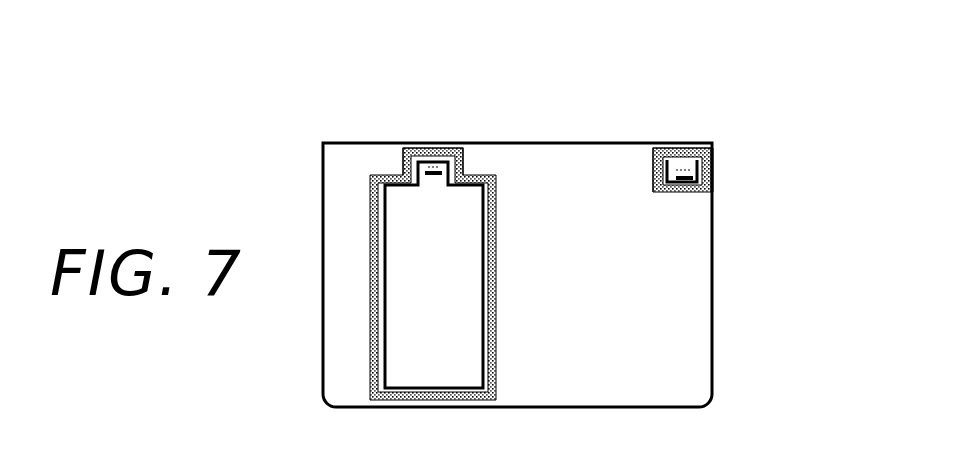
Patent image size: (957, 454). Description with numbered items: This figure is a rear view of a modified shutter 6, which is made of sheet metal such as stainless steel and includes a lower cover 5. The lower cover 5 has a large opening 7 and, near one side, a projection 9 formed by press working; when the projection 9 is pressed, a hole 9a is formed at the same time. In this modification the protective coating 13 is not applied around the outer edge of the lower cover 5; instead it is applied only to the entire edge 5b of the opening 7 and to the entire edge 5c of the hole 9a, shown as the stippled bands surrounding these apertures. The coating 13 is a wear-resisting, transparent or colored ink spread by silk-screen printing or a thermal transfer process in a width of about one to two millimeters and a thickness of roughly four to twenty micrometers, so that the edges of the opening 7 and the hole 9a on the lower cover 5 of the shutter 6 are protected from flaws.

The lower cover 5 is at (568, 162).
The edge of the opening 5b is at (496, 258).
The edge of the hole 5c is at (688, 194).
The shutter 6 is at (724, 111).
The opening 7 is at (485, 320).
The projection 9 is at (436, 177).
The hole 9a is at (716, 172).
The coating 13 is at (482, 170).